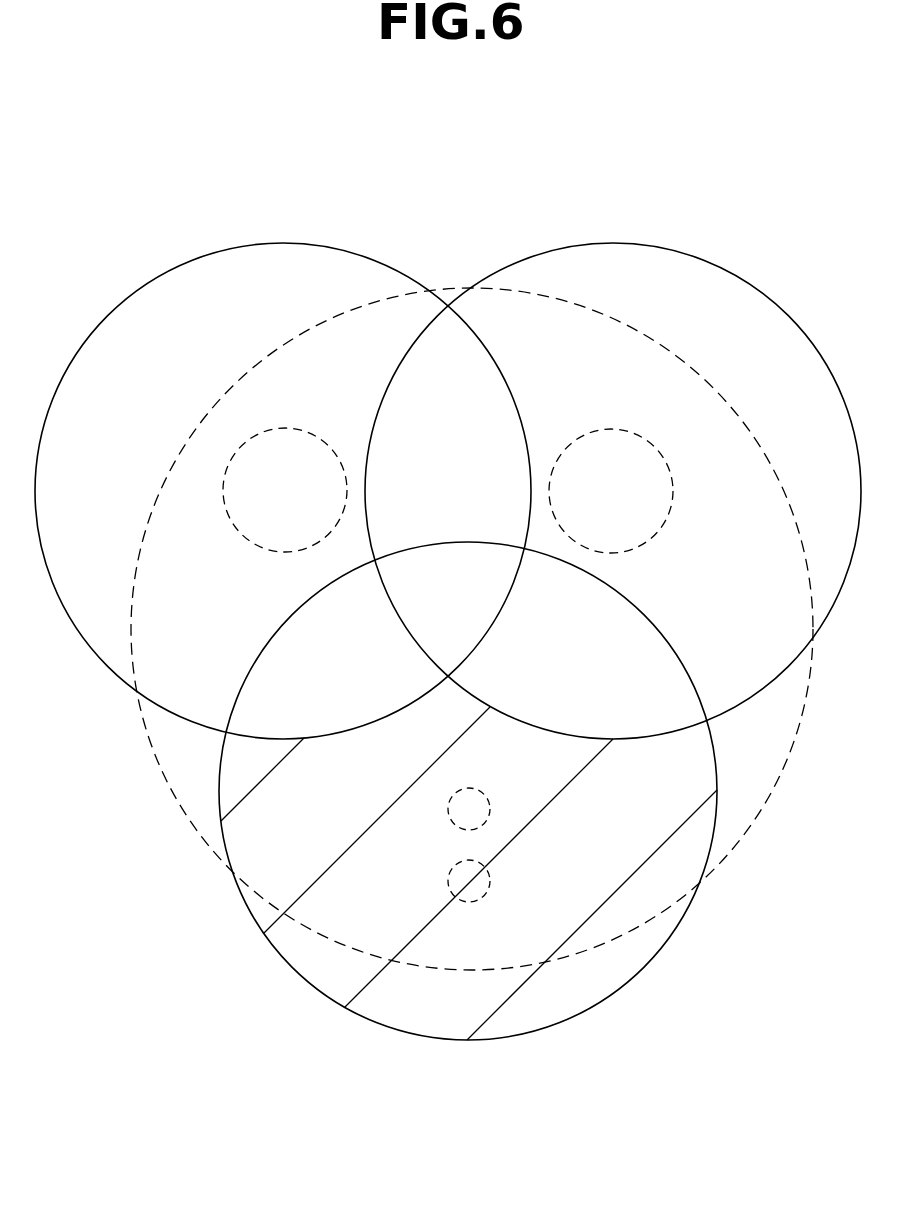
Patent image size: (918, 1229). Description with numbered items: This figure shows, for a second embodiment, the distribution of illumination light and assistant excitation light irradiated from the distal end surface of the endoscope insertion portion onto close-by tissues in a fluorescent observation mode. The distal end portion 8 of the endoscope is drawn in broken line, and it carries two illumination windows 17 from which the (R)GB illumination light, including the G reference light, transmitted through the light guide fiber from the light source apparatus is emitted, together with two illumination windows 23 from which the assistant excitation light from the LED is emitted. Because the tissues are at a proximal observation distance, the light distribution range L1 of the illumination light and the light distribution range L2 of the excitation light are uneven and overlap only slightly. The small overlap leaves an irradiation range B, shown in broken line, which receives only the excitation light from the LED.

The light distribution range of the illumination light L1 is at (138, 292).
The light distribution range of the assistant excitation light L2 is at (447, 1040).
The distal end portion 8 is at (742, 413).
The illumination windows 17 is at (252, 543).
The illumination windows 23 is at (490, 813).
The irradiation range B is at (265, 876).